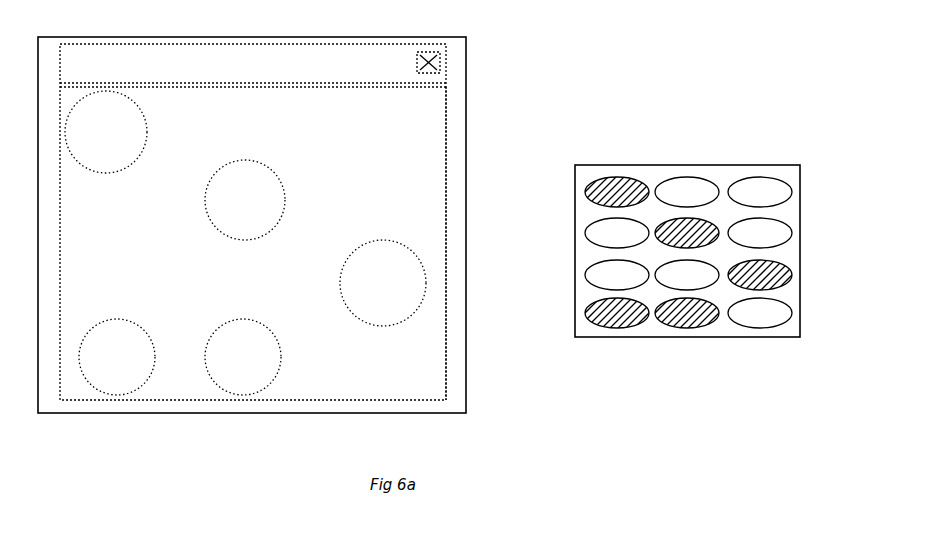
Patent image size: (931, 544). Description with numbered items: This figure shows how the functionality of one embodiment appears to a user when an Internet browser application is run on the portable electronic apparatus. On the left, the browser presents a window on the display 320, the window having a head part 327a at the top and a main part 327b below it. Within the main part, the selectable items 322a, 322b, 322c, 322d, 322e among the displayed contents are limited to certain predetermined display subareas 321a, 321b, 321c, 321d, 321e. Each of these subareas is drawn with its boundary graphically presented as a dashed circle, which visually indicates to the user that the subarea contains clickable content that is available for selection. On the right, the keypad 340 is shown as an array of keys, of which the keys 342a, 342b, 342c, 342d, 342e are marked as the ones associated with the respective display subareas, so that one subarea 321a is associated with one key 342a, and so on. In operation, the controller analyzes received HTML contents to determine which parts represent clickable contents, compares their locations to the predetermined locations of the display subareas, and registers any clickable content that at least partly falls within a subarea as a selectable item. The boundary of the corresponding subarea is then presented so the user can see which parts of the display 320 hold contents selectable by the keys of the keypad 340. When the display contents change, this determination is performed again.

The display 320 is at (466, 57).
The head part 327a is at (446, 81).
The main part 327b is at (444, 127).
The display subarea 321a is at (132, 97).
The display subarea 321b is at (283, 193).
The display subarea 321c is at (380, 243).
The display subarea 321d is at (118, 325).
The display subarea 321e is at (260, 326).
The selectable item 322a is at (150, 128).
The selectable item 322b is at (168, 197).
The selectable item 322c is at (345, 268).
The selectable item 322d is at (150, 336).
The selectable item 322e is at (305, 347).
The keypad 340 is at (677, 248).
The key 342a is at (608, 182).
The key 342b is at (670, 227).
The key 342c is at (748, 262).
The key 342d is at (625, 329).
The key 342e is at (690, 329).